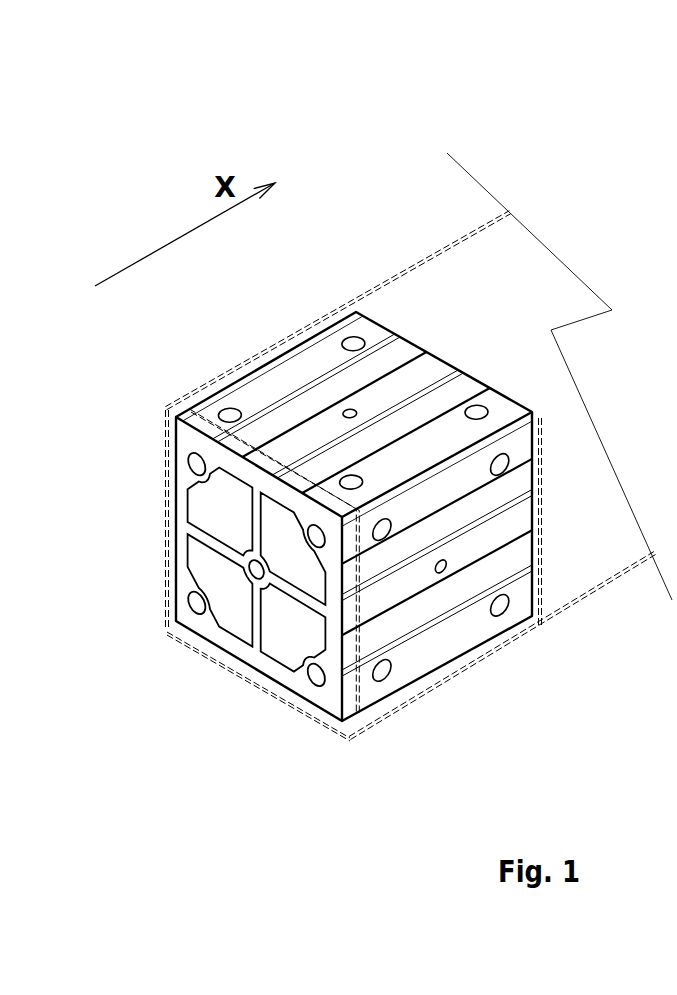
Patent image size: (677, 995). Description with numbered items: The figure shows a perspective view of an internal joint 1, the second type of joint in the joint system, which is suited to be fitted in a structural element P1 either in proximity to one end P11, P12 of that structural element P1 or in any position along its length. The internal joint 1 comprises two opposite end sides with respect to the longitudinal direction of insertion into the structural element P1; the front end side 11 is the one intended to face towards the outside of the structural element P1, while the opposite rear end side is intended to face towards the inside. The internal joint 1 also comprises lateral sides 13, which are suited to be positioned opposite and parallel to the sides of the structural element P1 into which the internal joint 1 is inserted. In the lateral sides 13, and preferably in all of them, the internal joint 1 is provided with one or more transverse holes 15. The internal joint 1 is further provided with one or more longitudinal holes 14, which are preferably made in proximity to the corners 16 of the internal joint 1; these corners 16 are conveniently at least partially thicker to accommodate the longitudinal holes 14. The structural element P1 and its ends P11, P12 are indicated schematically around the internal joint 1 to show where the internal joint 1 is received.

The internal joint 1 is at (131, 172).
The front end side 11 is at (246, 652).
The lateral sides 13 is at (496, 402).
The longitudinal holes 14 is at (192, 466).
The transverse holes 15 is at (237, 408).
The corners 16 is at (201, 496).
The structural element P1 is at (616, 578).
The end of the structural element P11 is at (373, 714).
The end of the structural element P12 is at (376, 722).